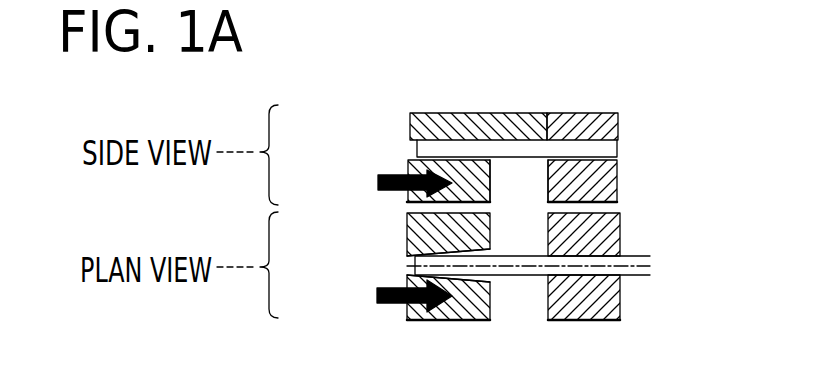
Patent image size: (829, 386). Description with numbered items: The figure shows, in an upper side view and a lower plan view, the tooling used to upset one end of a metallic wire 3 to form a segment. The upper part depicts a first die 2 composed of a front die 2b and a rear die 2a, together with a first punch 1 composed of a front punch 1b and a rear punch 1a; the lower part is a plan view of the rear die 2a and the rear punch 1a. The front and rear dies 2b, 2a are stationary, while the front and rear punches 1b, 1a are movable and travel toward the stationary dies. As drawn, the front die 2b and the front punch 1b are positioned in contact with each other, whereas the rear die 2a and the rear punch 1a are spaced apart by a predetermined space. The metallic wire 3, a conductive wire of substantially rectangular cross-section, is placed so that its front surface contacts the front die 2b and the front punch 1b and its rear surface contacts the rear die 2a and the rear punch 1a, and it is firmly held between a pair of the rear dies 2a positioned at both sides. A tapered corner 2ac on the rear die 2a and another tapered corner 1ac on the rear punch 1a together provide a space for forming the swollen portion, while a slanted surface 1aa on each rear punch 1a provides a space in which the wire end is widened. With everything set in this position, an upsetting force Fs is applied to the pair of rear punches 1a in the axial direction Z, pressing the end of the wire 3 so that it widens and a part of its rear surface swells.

The first punch 1 is at (332, 38).
The rear punch 1a is at (408, 160).
The front punch 1b is at (410, 117).
The tapered corner 1ac is at (488, 158).
The slanted surface 1aa is at (490, 253).
The first die 2 is at (697, 60).
The rear die 2a is at (607, 183).
The front die 2b is at (617, 125).
The tapered corner 2ac is at (548, 162).
The metallic wire 3 is at (580, 150).
The axial direction Z is at (634, 265).
The upsetting force Fs is at (378, 182).